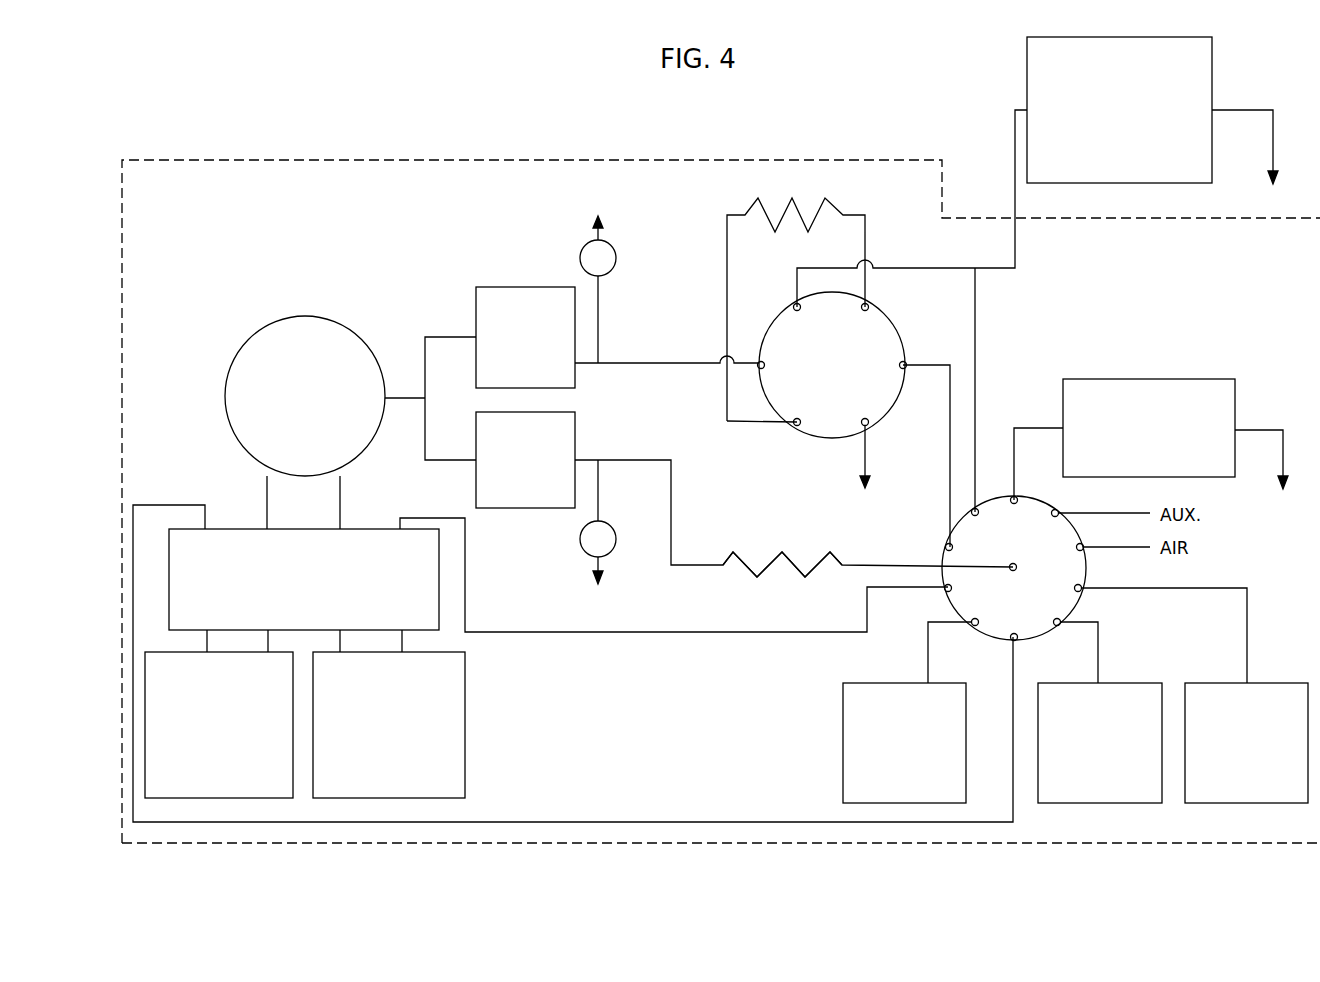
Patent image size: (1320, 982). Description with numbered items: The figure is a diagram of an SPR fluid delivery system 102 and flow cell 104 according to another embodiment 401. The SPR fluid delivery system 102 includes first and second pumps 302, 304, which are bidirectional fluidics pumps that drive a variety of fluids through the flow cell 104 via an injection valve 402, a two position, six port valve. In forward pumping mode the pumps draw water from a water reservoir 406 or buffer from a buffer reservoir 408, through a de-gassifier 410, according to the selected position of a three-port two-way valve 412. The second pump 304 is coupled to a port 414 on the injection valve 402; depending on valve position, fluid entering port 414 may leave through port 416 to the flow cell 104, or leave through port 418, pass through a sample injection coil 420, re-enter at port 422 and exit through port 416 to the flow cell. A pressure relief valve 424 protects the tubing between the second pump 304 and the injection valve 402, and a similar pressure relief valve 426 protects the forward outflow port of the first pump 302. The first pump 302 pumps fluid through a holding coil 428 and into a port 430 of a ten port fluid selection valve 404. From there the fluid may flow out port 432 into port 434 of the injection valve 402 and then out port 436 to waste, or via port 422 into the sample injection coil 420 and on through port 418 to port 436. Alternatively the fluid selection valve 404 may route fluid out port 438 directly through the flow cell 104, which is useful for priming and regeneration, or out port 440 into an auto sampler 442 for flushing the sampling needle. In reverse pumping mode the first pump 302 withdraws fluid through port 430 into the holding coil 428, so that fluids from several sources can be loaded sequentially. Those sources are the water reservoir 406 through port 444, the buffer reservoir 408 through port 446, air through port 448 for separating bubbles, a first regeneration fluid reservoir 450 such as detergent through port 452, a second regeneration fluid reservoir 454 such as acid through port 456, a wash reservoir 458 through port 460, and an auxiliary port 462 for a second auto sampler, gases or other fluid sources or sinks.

The SPR fluid delivery system 102 is at (402, 160).
The embodiment 401 is at (533, 126).
The flow cell 104 is at (1105, 129).
The first pump 302 is at (510, 478).
The second pump 304 is at (510, 356).
The injection valve 402 is at (817, 406).
The fluid selection valve 404 is at (999, 607).
The water reservoir 406 is at (374, 745).
The buffer reservoir 408 is at (204, 745).
The de-gassifier 410 is at (289, 600).
The three-port two-way valve 412 is at (290, 416).
The port 414 is at (762, 357).
The port 416 is at (794, 302).
The port 418 is at (797, 426).
The sample injection coil 420 is at (748, 210).
The port 422 is at (869, 306).
The pressure relief valve 424 is at (616, 260).
The pressure relief valve 426 is at (616, 538).
The holding coil 428 is at (798, 560).
The port 430 is at (1017, 565).
The port 432 is at (946, 546).
The port 434 is at (906, 360).
The port 436 is at (869, 426).
The port 438 is at (978, 507).
The port 440 is at (1019, 497).
The auto sampler 442 is at (1134, 456).
The port 444 is at (945, 591).
The port 446 is at (1011, 640).
The port 448 is at (1083, 544).
The first regeneration fluid reservoir 450 is at (1085, 763).
The port 452 is at (1061, 620).
The second regeneration fluid reservoir 454 is at (1231, 763).
The port 456 is at (1082, 586).
The wash reservoir 458 is at (889, 763).
The port 460 is at (974, 627).
The auxiliary port 462 is at (1059, 510).